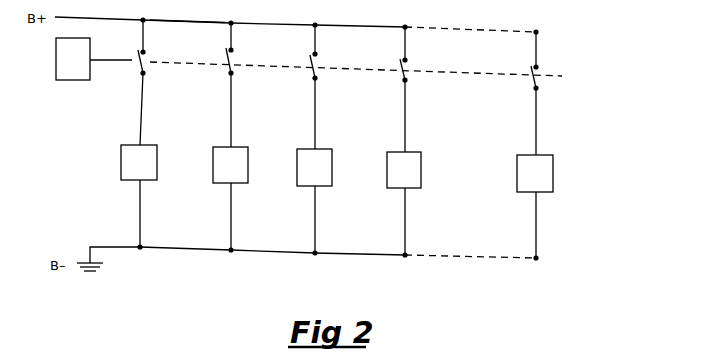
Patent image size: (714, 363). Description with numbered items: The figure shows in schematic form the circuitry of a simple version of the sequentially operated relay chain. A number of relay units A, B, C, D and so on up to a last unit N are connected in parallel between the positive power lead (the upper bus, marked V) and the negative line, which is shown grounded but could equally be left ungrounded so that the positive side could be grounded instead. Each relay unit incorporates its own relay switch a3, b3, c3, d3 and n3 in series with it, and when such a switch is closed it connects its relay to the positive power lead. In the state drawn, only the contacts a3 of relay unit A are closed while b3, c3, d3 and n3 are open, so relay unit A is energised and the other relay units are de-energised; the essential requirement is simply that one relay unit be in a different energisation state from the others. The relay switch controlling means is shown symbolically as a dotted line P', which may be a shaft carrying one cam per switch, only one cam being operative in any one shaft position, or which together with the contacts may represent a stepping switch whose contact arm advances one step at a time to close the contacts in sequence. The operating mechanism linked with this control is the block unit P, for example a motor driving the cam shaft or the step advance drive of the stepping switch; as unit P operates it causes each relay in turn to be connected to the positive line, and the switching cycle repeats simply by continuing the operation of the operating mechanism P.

The supply bus V is at (187, 12).
The operating mechanism P is at (94, 59).
The relay switch controlling means P' is at (356, 58).
The relay switch a3 is at (151, 82).
The relay switch b3 is at (239, 85).
The relay switch c3 is at (323, 87).
The relay switch d3 is at (413, 89).
The relay switch n3 is at (544, 93).
The relay unit A is at (139, 196).
The relay unit B is at (230, 198).
The relay unit C is at (314, 201).
The relay unit D is at (404, 203).
The relay unit N is at (535, 206).